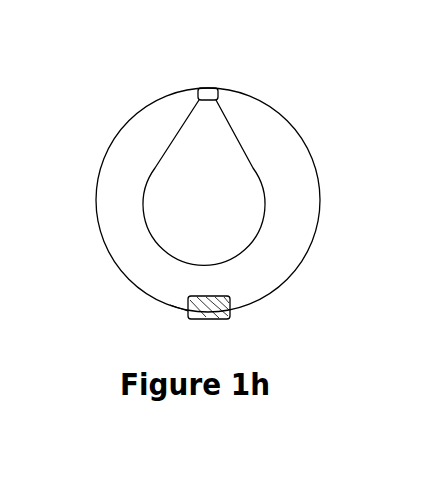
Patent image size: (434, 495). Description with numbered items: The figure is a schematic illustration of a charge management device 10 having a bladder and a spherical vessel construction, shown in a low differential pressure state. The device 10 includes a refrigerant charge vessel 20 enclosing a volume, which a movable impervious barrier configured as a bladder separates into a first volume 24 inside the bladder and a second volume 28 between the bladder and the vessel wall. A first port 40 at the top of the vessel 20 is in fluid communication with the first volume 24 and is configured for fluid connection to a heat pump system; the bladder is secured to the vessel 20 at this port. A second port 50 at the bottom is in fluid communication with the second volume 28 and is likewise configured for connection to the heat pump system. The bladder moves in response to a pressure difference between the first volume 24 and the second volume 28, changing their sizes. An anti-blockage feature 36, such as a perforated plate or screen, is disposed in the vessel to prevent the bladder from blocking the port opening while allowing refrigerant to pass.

The charge management device 10 is at (127, 76).
The refrigerant charge vessel 20 is at (113, 142).
The first volume 24 is at (221, 216).
The second volume 28 is at (276, 287).
The anti-blockage feature 36 is at (188, 311).
The first port 40 is at (212, 88).
The second port 50 is at (193, 320).